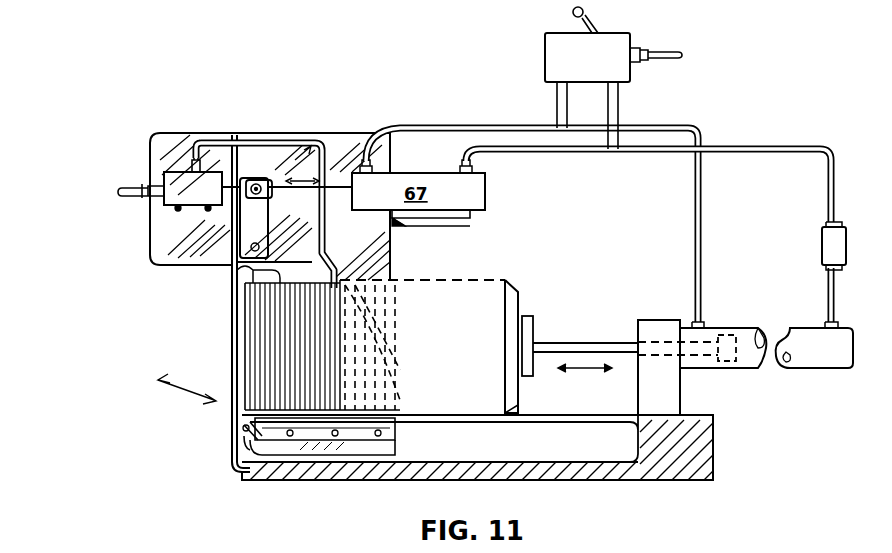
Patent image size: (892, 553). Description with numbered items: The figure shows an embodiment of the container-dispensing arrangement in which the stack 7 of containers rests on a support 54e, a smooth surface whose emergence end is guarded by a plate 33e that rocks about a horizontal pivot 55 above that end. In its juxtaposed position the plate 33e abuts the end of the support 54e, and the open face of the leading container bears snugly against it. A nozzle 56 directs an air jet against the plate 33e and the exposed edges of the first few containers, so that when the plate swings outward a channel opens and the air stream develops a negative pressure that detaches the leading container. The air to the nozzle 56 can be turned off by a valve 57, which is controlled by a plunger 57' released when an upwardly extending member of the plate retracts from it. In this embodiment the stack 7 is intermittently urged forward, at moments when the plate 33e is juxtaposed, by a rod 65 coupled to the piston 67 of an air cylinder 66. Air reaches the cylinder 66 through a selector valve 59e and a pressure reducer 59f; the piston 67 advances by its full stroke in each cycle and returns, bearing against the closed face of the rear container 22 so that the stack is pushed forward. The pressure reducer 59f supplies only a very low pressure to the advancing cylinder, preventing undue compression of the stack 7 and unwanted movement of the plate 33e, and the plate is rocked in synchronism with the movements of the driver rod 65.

The stack 7 is at (270, 352).
The rear container 22 is at (398, 333).
The plate 33e is at (232, 318).
The support 54e is at (520, 424).
The horizontal pivot 55 is at (251, 250).
The nozzle 56 is at (242, 432).
The valve 57 is at (181, 215).
The plunger 57' is at (287, 181).
The selector valve 59e is at (700, 51).
The pressure reducer 59f is at (835, 243).
The rod 65 is at (564, 348).
The air cylinder 66 is at (814, 345).
The piston 67 is at (728, 347).